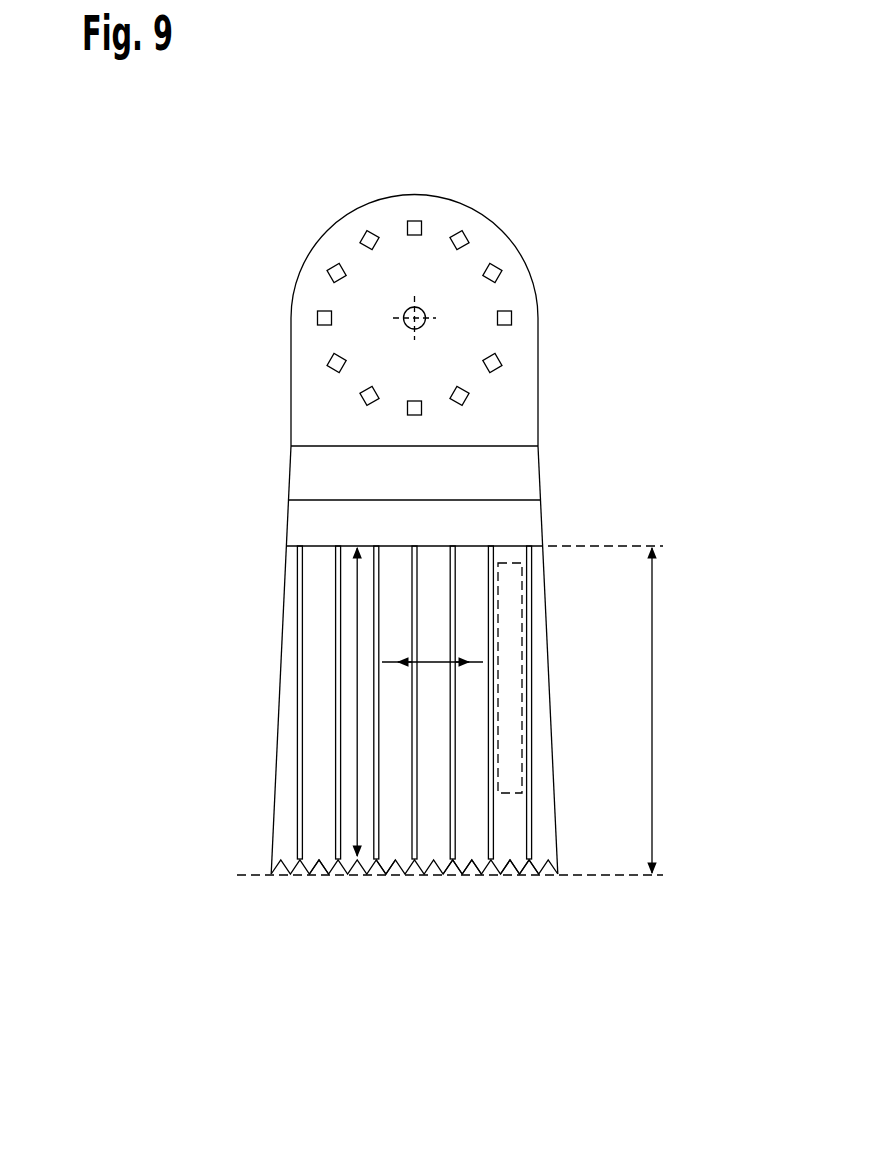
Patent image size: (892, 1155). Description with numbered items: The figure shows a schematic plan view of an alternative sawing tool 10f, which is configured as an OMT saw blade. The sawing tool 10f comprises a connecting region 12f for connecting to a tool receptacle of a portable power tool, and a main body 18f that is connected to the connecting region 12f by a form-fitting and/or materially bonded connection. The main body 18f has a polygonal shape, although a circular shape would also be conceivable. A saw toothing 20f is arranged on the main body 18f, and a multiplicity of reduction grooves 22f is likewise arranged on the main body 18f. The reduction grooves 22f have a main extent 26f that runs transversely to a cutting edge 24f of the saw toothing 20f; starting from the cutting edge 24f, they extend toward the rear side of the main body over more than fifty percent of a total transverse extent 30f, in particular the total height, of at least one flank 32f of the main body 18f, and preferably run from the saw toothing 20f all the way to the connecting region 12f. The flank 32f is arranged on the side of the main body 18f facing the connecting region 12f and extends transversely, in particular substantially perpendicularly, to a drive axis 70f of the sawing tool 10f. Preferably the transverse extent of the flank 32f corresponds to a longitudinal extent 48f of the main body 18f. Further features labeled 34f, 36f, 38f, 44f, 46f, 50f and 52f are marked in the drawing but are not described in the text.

The sawing tool 10f is at (210, 188).
The connecting region 12f is at (546, 222).
The main body 18f is at (262, 675).
The saw toothing 20f is at (258, 886).
The reduction grooves 22f is at (513, 806).
The cutting edge 24f is at (585, 876).
The main extent 26f is at (360, 602).
The total transverse extent 30f is at (652, 708).
The longitudinal extent 48f is at (605, 709).
The flank 32f is at (285, 787).
The cutting tooth 34f is at (500, 838).
The cutting tooth 36f is at (323, 876).
The cutting tooth 38f is at (448, 876).
The tooth gap 44f is at (392, 876).
The tooth gap 46f is at (470, 876).
The slot spacing 50f is at (433, 662).
The slot recess 52f is at (522, 598).
The drive axis 70f is at (408, 314).